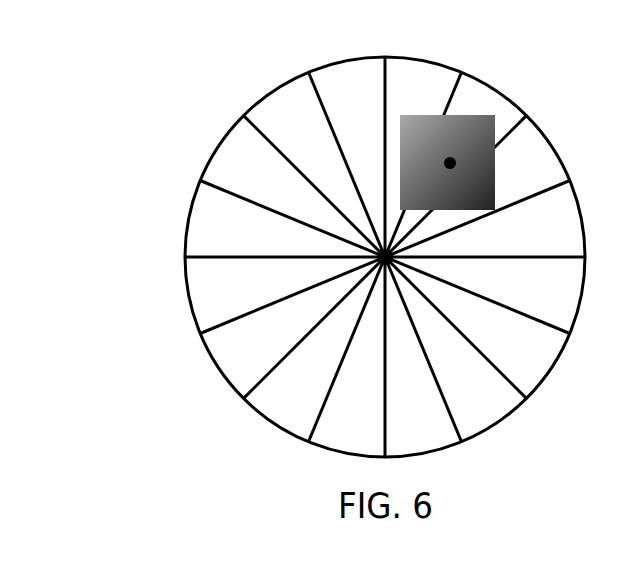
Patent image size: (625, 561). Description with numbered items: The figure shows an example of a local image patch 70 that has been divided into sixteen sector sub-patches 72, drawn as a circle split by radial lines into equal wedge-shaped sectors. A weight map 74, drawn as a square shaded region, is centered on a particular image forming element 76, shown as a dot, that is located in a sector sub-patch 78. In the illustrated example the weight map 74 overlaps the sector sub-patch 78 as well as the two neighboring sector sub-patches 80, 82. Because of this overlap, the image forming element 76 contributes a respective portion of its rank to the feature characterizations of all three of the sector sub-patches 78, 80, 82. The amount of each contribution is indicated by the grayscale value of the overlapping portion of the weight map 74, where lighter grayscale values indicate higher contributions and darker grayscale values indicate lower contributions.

The local image patch 70 is at (97, 108).
The sector sub-patches 72 is at (223, 239).
The weight map 74 is at (492, 190).
The image forming element 76 is at (451, 168).
The sector sub-patch 78 is at (495, 98).
The neighboring sector sub-patch 80 is at (547, 153).
The neighboring sector sub-patch 82 is at (426, 68).